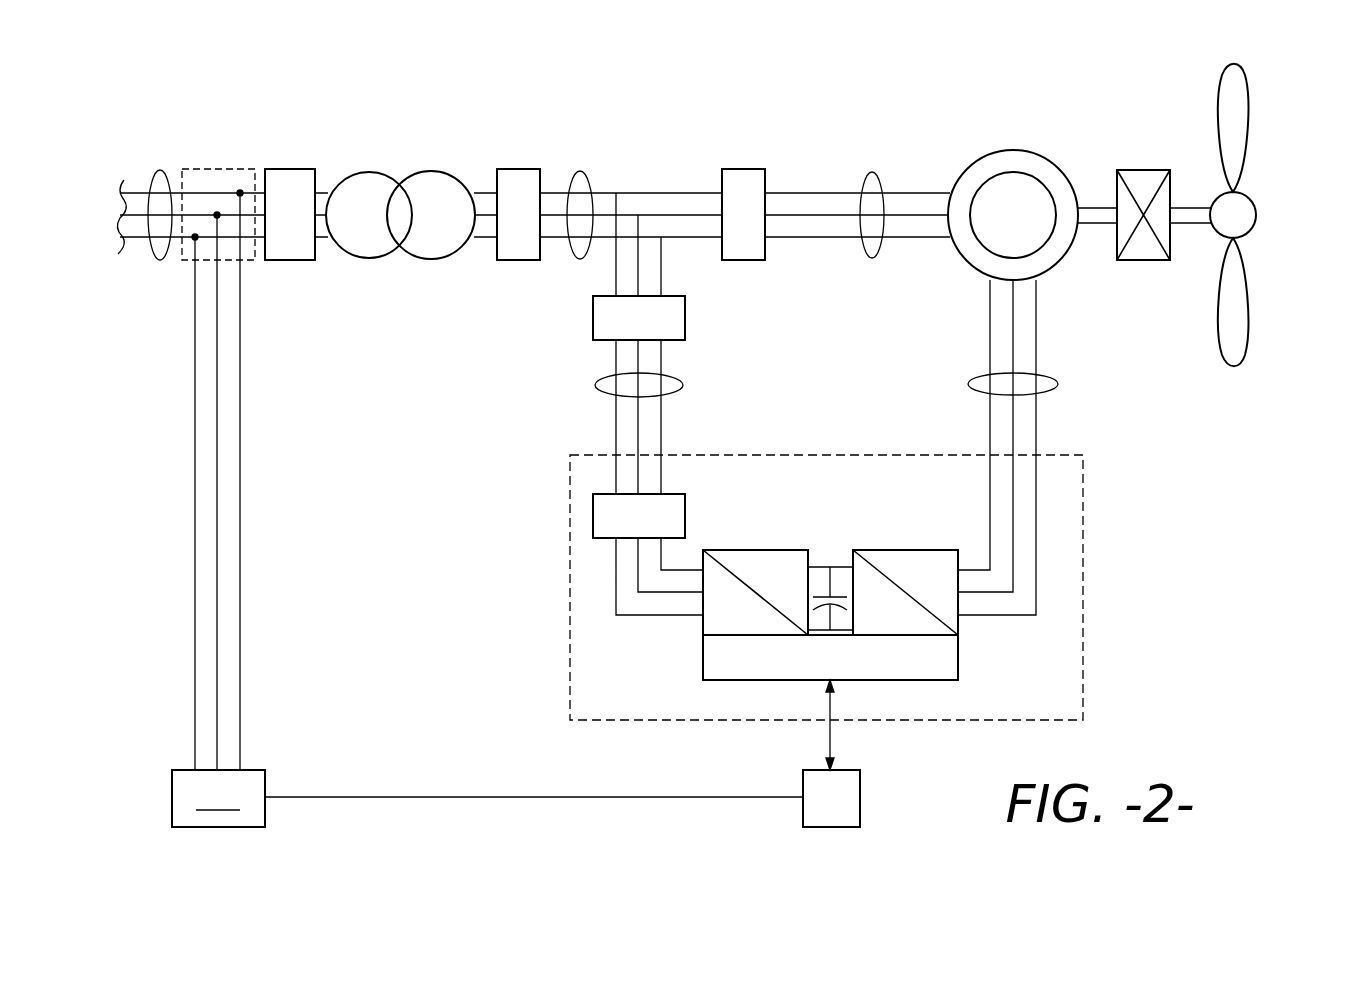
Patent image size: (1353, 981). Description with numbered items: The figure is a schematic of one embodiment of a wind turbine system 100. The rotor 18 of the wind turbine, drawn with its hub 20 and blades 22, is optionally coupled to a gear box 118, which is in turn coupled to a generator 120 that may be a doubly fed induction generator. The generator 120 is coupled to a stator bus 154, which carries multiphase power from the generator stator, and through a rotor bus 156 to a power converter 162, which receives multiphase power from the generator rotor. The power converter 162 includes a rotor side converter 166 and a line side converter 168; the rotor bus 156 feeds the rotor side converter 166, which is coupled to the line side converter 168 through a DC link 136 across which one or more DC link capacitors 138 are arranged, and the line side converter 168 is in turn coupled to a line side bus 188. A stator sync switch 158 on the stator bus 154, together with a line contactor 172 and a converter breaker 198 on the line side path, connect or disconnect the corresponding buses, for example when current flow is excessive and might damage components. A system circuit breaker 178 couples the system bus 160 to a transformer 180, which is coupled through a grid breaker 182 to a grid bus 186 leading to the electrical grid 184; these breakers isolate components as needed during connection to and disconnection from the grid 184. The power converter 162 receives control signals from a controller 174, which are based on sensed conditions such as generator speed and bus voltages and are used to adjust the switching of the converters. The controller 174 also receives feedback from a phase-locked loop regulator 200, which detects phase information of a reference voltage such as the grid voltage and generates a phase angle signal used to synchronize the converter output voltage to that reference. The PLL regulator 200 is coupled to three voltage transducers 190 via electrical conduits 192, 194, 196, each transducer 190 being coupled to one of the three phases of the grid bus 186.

The wind turbine system 100 is at (356, 100).
The rotor 18 is at (1280, 219).
The hub 20 is at (1258, 209).
The rotor blade 22 is at (1280, 124).
The gear box 118 is at (1145, 170).
The generator 120 is at (1013, 150).
The stator bus 154 is at (872, 170).
The rotor bus 156 is at (1058, 384).
The stator sync switch 158 is at (745, 169).
The system bus 160 is at (582, 170).
The power converter 162 is at (1083, 553).
The rotor side converter 166 is at (960, 624).
The line side converter 168 is at (699, 624).
The DC link 136 is at (838, 563).
The DC link capacitor 138 is at (815, 596).
The line contactor 172 is at (593, 520).
The controller 174 is at (860, 793).
The system circuit breaker 178 is at (517, 169).
The transformer 180 is at (427, 171).
The grid breaker 182 is at (290, 169).
The electrical grid 184 is at (130, 180).
The grid bus 186 is at (155, 172).
The line side bus 188 is at (595, 393).
The voltage transducer 190 is at (218, 166).
The electrical conduit 192 is at (195, 552).
The electrical conduit 194 is at (217, 503).
The electrical conduit 196 is at (240, 453).
The converter breaker 198 is at (593, 322).
The PLL regulator 200 is at (487, 798).